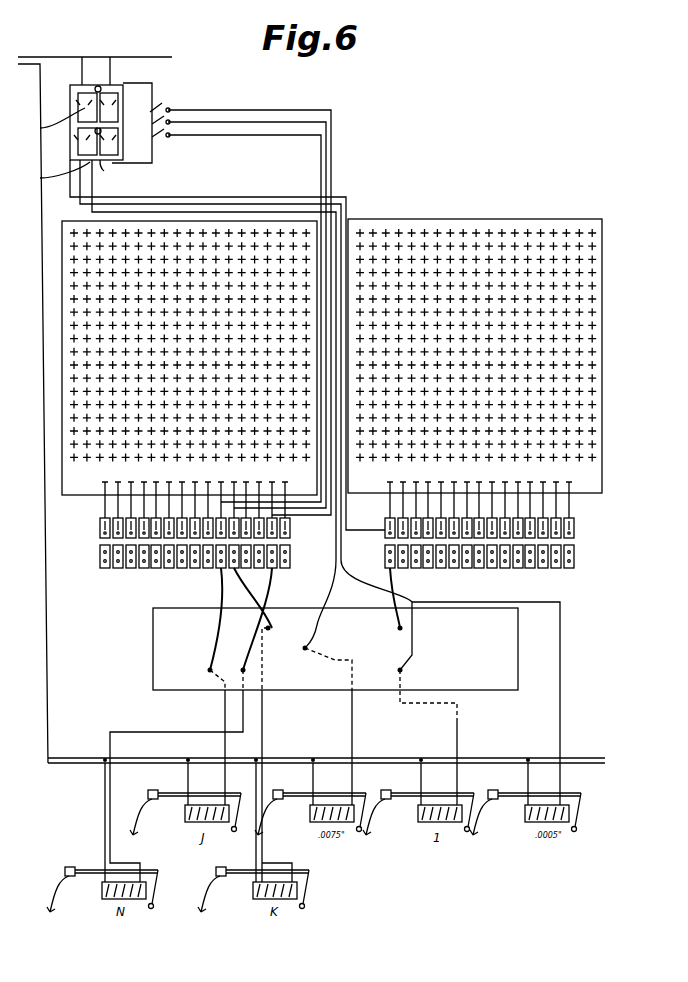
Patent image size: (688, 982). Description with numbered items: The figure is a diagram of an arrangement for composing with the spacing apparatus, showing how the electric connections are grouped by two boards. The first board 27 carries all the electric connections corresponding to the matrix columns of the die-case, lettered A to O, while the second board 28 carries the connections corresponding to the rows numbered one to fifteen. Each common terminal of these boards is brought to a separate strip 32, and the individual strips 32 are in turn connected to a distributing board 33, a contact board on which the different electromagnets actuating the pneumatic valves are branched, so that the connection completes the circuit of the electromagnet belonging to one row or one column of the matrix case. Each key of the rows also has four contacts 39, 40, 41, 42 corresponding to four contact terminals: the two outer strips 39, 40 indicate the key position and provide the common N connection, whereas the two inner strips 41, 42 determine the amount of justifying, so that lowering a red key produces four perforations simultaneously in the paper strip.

The board 27 is at (185, 221).
The board 28 is at (430, 219).
The strip 32 is at (290, 560).
The distributing board 33 is at (153, 665).
The contact 39 is at (72, 100).
The contact 40 is at (120, 104).
The contact 41 is at (86, 93).
The contact 42 is at (116, 93).